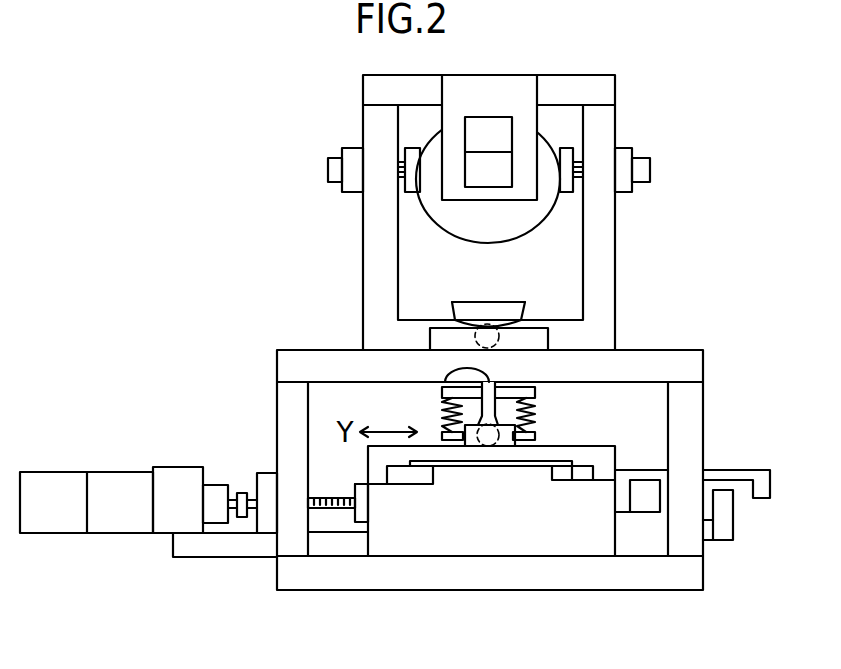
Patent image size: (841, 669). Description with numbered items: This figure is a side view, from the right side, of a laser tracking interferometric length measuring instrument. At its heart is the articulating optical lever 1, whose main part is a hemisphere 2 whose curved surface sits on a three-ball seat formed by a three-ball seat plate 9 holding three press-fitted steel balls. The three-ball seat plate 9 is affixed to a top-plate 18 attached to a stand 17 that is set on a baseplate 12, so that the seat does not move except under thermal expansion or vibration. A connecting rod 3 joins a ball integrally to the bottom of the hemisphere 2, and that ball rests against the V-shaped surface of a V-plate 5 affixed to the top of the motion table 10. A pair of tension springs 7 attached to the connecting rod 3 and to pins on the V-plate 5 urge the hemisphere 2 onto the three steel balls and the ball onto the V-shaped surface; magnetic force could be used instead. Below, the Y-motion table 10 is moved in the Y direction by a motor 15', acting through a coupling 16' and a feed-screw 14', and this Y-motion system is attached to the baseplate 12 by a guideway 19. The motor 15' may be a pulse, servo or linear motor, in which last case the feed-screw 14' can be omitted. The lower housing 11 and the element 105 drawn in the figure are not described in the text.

The articulating optical lever 1 is at (517, 302).
The hemisphere 2 is at (462, 302).
The objective lens 105 is at (493, 178).
The three-ball seat plate 9 is at (537, 345).
The top-plate 18 is at (295, 368).
The stand 17 is at (293, 422).
The base housing 11 is at (510, 547).
The baseplate 12 is at (432, 578).
The Y-motion table 10 is at (603, 452).
The guideway 19 is at (562, 478).
The feed-screw 14' is at (338, 571).
The motor 15' is at (148, 528).
The coupling 16' is at (230, 477).
The connecting rod 3 is at (441, 390).
The tension springs 7 is at (537, 414).
The V-plate 5 is at (498, 447).